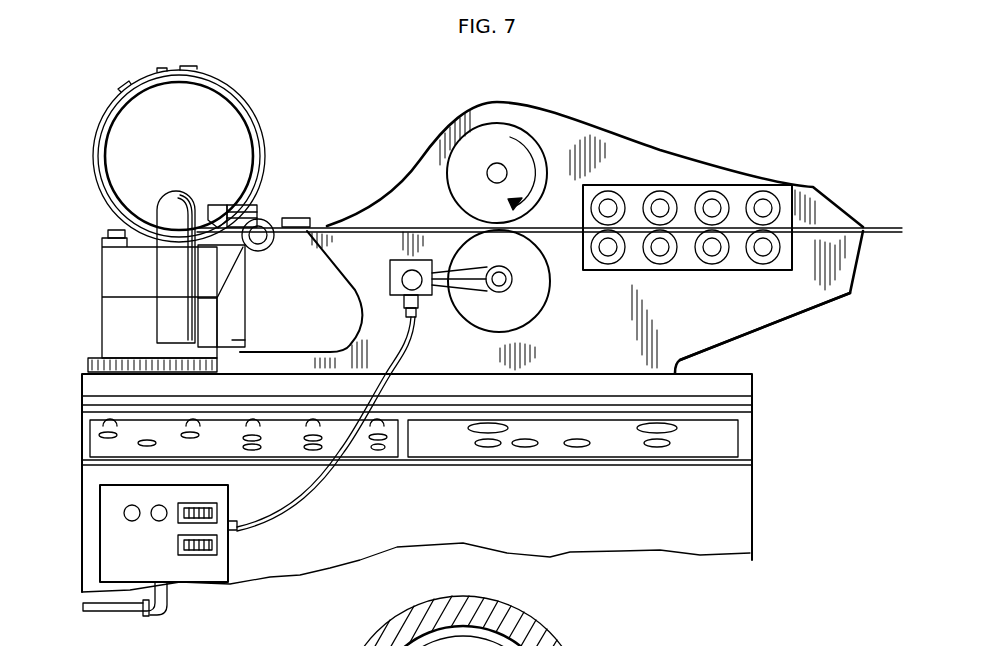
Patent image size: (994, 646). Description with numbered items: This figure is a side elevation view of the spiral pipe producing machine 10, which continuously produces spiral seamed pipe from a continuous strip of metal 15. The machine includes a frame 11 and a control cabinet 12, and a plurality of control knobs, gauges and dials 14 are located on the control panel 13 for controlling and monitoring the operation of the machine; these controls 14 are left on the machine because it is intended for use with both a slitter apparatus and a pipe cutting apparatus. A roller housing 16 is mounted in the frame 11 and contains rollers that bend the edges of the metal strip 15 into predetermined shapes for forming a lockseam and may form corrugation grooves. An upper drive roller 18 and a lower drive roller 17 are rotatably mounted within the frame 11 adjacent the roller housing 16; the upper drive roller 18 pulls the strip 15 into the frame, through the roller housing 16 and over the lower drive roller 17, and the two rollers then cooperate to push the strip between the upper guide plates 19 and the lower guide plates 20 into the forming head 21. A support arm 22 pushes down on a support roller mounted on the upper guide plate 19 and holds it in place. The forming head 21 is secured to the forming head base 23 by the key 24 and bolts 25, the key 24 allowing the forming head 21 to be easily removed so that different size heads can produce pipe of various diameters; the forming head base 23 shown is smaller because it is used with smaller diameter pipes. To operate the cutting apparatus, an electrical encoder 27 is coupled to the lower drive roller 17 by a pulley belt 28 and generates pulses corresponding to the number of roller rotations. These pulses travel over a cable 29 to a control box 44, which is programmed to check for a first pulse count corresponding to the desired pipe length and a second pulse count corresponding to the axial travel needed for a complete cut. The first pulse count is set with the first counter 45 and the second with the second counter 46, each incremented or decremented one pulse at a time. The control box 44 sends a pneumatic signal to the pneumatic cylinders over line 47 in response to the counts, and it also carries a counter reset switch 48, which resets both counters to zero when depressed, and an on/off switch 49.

The spiral pipe producing machine 10 is at (619, 144).
The frame 11 is at (793, 300).
The control cabinet 12 is at (752, 498).
The control panel 13 is at (730, 438).
The control knobs, gauges and dials 14 is at (373, 441).
The continuous strip of metal 15 is at (884, 226).
The roller housing 16 is at (680, 272).
The lower drive roller 17 is at (527, 305).
The upper drive roller 18 is at (498, 133).
The upper guide plates 19 is at (299, 218).
The lower guide plates 20 is at (270, 247).
The forming head 21 is at (228, 80).
The support arm 22 is at (181, 190).
The forming head base 23 is at (232, 316).
The key 24 is at (100, 240).
The bolts 25 is at (110, 230).
The electrical encoder 27 is at (390, 268).
The pulley belt 28 is at (461, 291).
The cable 29 is at (403, 353).
The control box 44 is at (154, 570).
The first counter 45 is at (204, 503).
The second counter 46 is at (195, 556).
The line 47 is at (163, 610).
The counter reset switch 48 is at (124, 514).
The on/off switch 49 is at (152, 506).